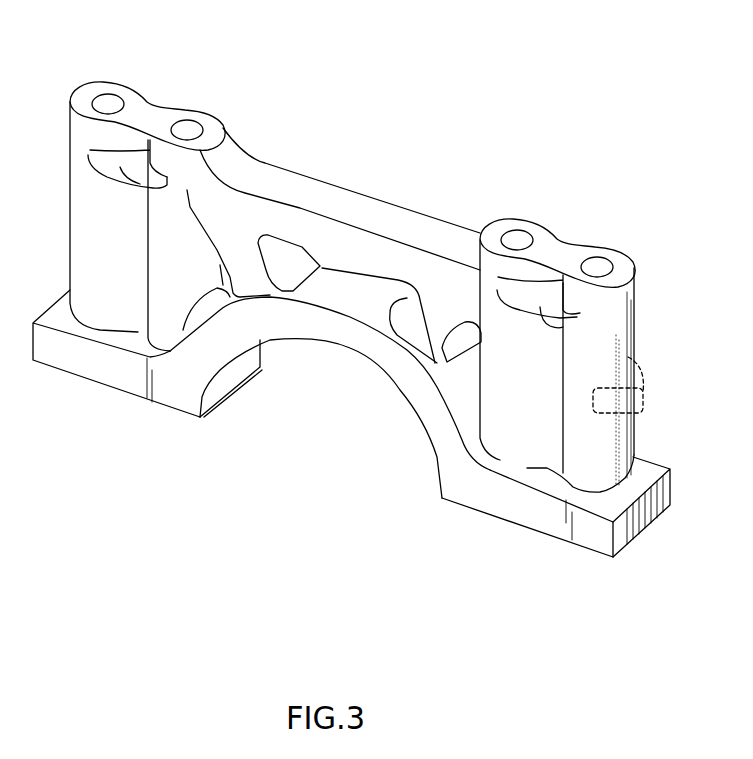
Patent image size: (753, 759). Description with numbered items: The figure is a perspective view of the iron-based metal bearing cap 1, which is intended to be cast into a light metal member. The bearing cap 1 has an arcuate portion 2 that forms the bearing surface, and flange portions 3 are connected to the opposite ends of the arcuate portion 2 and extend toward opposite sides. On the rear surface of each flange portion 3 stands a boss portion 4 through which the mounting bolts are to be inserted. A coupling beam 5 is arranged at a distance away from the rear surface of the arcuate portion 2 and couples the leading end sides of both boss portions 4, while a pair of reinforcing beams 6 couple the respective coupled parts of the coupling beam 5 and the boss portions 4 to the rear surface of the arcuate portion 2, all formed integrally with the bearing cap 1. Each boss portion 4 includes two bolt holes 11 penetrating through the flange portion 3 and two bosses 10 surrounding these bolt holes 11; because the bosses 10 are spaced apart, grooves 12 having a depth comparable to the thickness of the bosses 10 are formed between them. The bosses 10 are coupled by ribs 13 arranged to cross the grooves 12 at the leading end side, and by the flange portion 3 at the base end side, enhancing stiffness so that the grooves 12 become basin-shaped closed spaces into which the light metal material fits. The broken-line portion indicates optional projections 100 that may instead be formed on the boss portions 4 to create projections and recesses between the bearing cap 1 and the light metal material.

The bearing cap 1 is at (426, 121).
The arcuate portion 2 is at (378, 358).
The flange portion 3 is at (108, 375).
The boss portion 4 is at (219, 71).
The coupling beam 5 is at (350, 197).
The reinforcing beam 6 is at (242, 262).
The boss 10 is at (175, 112).
The bolt hole 11 is at (102, 102).
The groove 12 is at (147, 255).
The rib 13 is at (120, 167).
The projection 100 is at (643, 394).